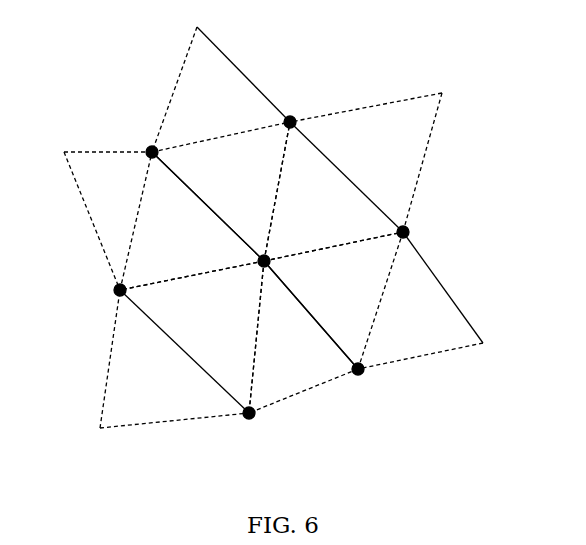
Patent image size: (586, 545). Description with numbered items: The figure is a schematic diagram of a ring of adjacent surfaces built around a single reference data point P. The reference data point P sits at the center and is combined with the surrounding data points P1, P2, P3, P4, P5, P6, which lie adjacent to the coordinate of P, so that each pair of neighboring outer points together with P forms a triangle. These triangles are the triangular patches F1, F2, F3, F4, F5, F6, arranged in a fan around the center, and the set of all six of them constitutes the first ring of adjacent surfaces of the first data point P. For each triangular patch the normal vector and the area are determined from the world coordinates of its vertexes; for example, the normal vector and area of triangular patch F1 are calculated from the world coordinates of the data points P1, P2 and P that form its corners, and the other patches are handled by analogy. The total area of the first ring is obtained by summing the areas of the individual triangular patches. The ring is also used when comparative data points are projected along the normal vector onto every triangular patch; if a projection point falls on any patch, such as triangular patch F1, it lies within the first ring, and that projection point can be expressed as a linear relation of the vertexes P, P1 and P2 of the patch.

The reference data point P is at (274, 248).
The data point P1 is at (141, 138).
The data point P2 is at (302, 110).
The data point P3 is at (420, 228).
The data point P4 is at (364, 384).
The data point P5 is at (249, 426).
The data point P6 is at (106, 296).
The triangular patch F1 is at (221, 191).
The triangular patch F2 is at (333, 191).
The triangular patch F3 is at (333, 300).
The triangular patch F4 is at (303, 337).
The triangular patch F5 is at (192, 337).
The triangular patch F6 is at (192, 221).